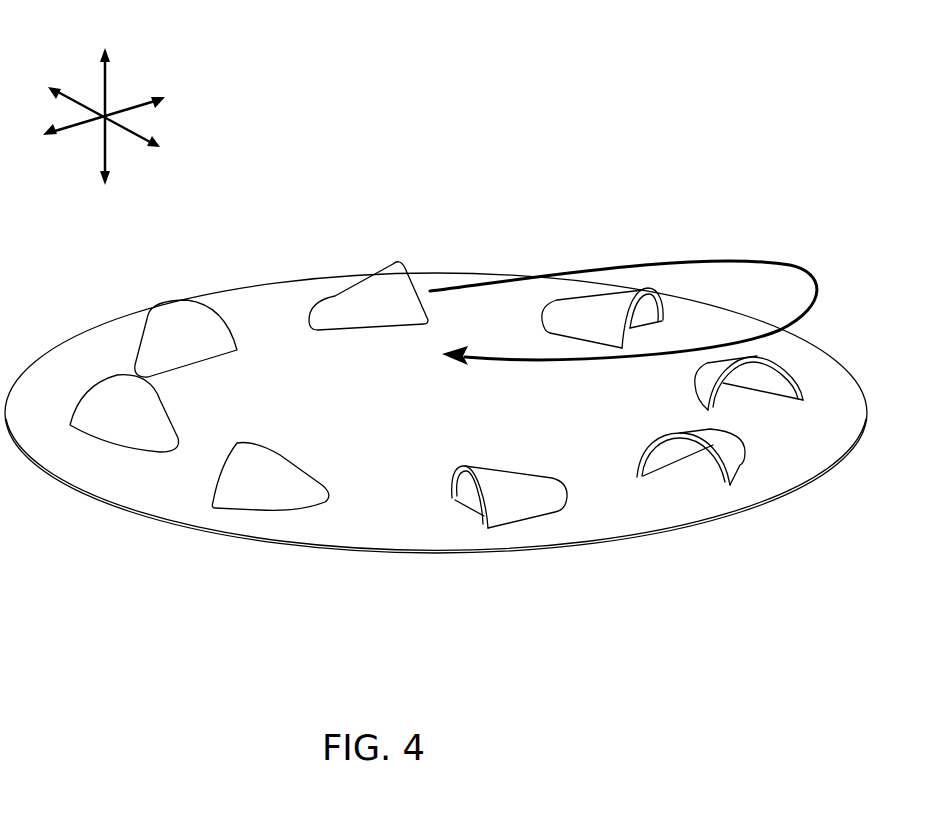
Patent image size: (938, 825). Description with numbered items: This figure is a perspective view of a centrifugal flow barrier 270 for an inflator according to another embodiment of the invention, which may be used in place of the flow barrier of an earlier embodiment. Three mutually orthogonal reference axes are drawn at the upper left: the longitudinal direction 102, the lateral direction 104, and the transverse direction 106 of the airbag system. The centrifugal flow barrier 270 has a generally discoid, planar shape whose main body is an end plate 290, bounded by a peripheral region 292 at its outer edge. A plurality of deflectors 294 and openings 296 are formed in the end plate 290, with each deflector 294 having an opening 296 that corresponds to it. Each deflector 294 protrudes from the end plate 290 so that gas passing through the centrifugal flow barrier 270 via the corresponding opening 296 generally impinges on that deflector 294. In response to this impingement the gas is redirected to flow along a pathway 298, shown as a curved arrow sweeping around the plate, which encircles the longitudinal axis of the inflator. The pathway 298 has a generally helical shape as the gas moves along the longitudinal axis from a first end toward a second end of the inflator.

The longitudinal direction 102 is at (109, 78).
The lateral direction 104 is at (140, 108).
The transverse direction 106 is at (140, 138).
The centrifugal flow barrier 270 is at (632, 166).
The end plate 290 is at (264, 303).
The peripheral region 292 is at (708, 525).
The deflector 294 is at (272, 465).
The opening 296 is at (448, 488).
The pathway 298 is at (745, 262).